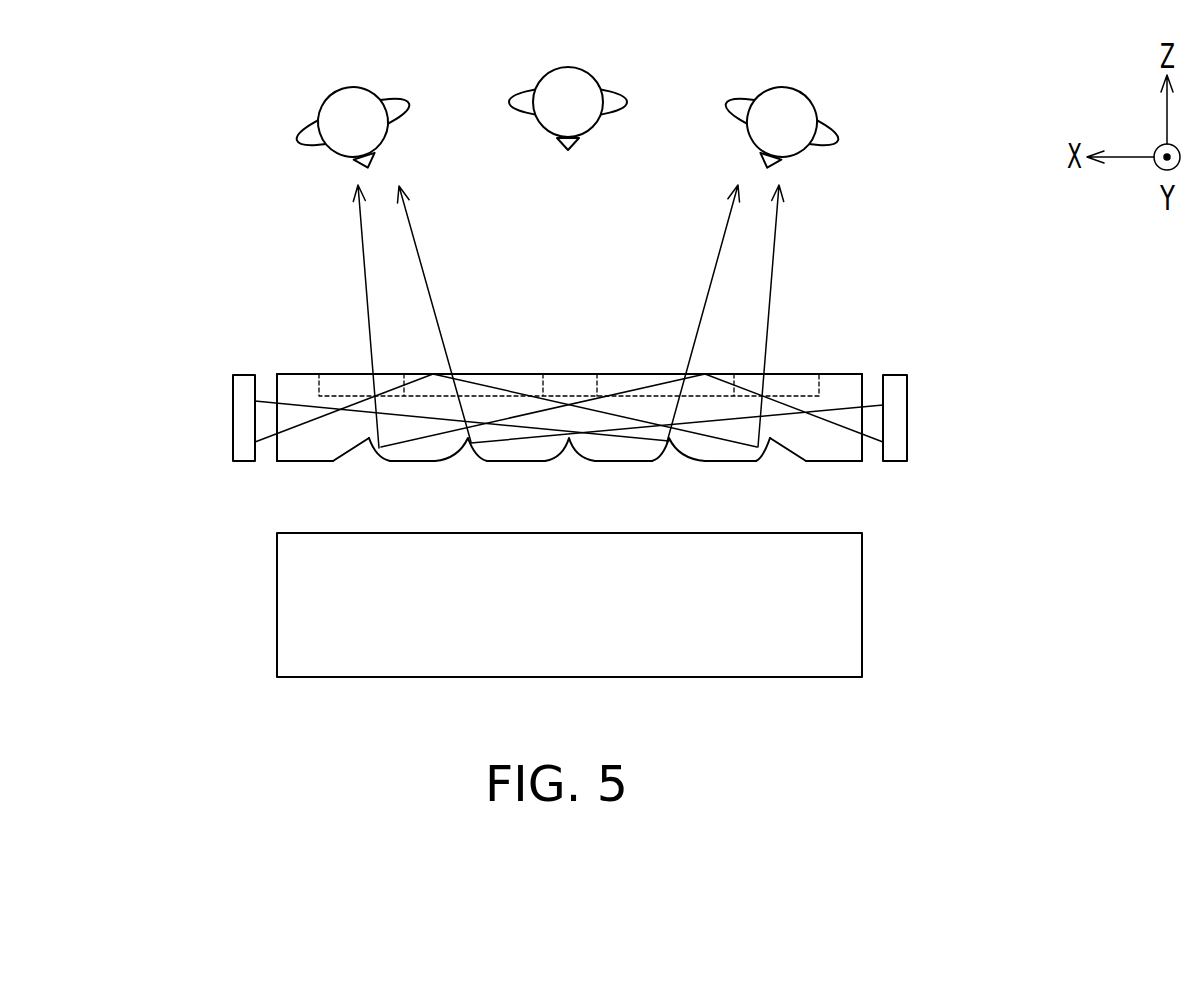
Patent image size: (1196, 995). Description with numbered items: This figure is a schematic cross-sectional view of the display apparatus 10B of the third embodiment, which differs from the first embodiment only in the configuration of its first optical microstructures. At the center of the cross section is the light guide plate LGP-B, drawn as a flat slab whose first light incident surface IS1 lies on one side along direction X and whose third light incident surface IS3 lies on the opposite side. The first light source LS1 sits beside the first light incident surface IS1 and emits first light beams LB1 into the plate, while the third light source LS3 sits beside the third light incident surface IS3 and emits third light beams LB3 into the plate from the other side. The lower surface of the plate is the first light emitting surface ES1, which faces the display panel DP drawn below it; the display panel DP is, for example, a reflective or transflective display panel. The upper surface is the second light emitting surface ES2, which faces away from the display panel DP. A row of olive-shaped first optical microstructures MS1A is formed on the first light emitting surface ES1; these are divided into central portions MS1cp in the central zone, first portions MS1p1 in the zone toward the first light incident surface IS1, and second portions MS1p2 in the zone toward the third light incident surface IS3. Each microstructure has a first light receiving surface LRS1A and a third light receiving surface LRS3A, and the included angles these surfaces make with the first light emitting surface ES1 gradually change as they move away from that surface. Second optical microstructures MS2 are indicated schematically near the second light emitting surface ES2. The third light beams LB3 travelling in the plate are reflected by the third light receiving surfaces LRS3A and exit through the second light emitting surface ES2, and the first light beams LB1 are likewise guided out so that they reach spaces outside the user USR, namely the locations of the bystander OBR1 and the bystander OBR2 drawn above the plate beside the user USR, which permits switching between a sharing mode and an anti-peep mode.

The user USR is at (568, 82).
The bystander OBR1 is at (780, 110).
The bystander OBR2 is at (355, 110).
The first light source LS1 is at (895, 412).
The third light source LS3 is at (245, 412).
The light guide plate LGP-B is at (606, 461).
The first light incident surface IS1 is at (875, 382).
The third light incident surface IS3 is at (275, 380).
The first light emitting surface ES1 is at (320, 465).
The second light emitting surface ES2 is at (313, 374).
The first optical microstructures MS1A is at (564, 533).
The first portions MS1p1 is at (682, 452).
The second portions MS1p2 is at (392, 516).
The central portions MS1cp is at (578, 452).
The first light receiving surface LRS1A is at (391, 452).
The third light receiving surface LRS3A is at (758, 458).
The second optical microstructures MS2 is at (591, 395).
The first light beams LB1 is at (834, 408).
The third light beams LB3 is at (430, 417).
The display panel DP is at (842, 615).
The display apparatus 10B is at (940, 715).